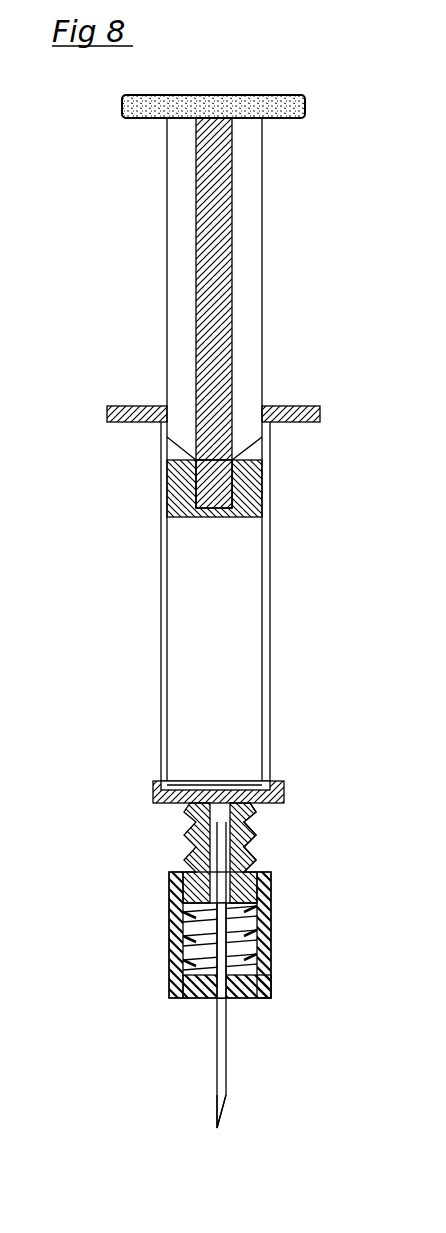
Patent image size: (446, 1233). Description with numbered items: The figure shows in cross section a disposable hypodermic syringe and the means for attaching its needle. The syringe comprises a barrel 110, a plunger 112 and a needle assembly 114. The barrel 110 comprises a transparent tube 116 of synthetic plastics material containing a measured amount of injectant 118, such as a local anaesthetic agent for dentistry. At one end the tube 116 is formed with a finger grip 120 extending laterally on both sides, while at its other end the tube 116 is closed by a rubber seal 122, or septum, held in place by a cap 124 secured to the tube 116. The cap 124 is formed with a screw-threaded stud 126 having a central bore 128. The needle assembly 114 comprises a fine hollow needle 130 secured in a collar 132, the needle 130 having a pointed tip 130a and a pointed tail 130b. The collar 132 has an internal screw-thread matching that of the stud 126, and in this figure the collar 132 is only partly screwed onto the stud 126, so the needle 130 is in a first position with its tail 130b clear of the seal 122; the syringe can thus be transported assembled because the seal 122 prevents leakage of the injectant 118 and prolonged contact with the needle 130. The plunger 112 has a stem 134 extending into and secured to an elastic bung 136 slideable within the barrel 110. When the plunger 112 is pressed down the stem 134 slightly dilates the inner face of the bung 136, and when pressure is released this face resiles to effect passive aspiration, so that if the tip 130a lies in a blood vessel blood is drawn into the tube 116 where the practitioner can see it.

The barrel 110 is at (137, 655).
The plunger 112 is at (143, 240).
The needle assembly 114 is at (185, 1025).
The transparent tube 116 is at (162, 550).
The injectant 118 is at (214, 649).
The finger grip 120 is at (125, 407).
The rubber seal 122 is at (190, 785).
The cap 124 is at (153, 783).
The screw-threaded stud 126 is at (185, 850).
The central bore 128 is at (246, 806).
The hollow needle 130 is at (218, 1070).
The needle tip 130a is at (222, 1112).
The needle tail 130b is at (262, 841).
The collar 132 is at (168, 910).
The stem 134 is at (197, 330).
The elastic bung 136 is at (168, 497).